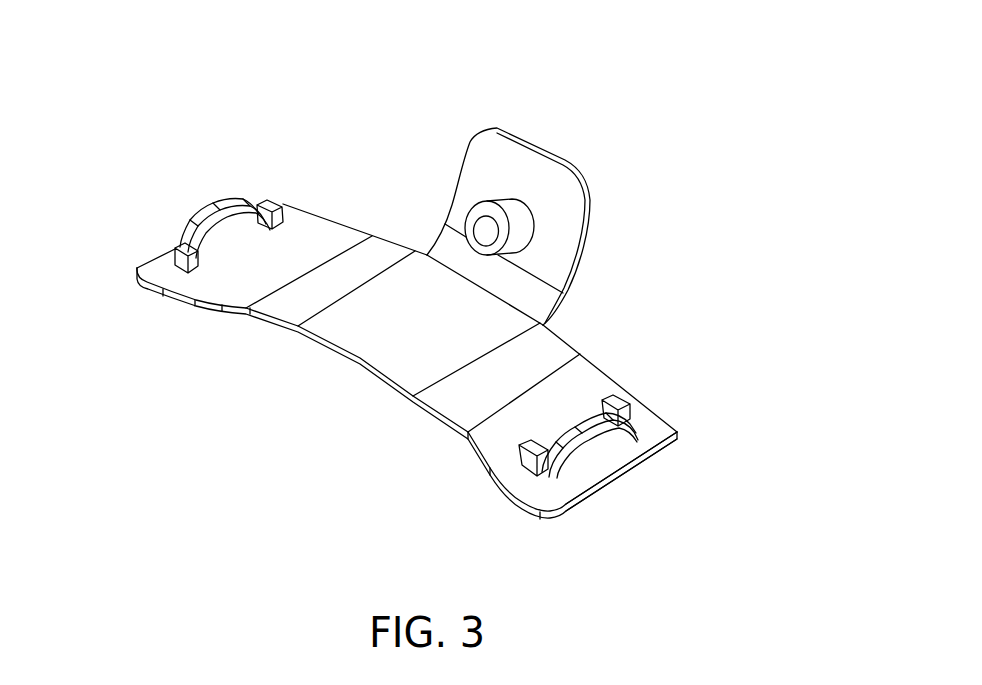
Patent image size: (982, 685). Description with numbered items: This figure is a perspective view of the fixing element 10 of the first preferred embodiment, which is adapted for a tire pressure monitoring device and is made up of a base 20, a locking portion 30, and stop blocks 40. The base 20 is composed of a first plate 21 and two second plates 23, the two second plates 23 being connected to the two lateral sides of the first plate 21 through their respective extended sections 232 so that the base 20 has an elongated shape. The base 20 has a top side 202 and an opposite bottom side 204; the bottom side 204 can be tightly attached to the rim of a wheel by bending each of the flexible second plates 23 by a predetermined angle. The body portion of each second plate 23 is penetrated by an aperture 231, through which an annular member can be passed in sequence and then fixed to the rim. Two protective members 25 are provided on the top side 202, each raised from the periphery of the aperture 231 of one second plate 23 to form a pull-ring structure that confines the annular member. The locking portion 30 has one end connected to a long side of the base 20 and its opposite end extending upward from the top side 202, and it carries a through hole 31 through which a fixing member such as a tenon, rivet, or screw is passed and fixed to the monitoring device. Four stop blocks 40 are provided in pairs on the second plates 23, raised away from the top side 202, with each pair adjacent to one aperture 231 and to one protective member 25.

The fixing element 10 is at (331, 84).
The base 20 is at (147, 264).
The first plate 21 is at (382, 350).
The second plates 23 is at (330, 238).
The protective members 25 is at (213, 208).
The locking portion 30 is at (590, 200).
The through hole 31 is at (476, 208).
The stop blocks 40 is at (268, 198).
The top side 202 is at (472, 324).
The bottom side 204 is at (648, 481).
The aperture 231 is at (228, 254).
The extended section 232 is at (290, 303).